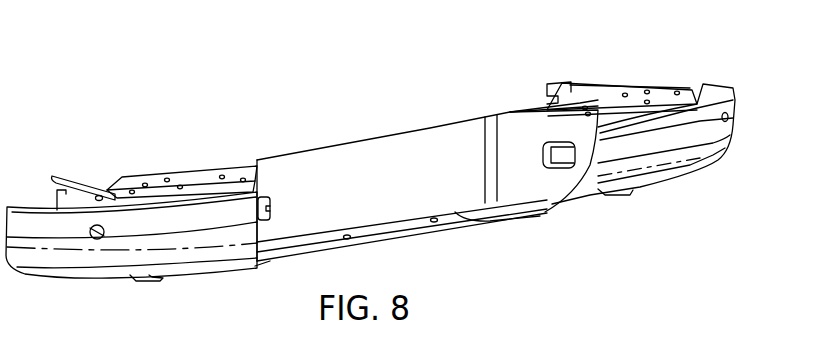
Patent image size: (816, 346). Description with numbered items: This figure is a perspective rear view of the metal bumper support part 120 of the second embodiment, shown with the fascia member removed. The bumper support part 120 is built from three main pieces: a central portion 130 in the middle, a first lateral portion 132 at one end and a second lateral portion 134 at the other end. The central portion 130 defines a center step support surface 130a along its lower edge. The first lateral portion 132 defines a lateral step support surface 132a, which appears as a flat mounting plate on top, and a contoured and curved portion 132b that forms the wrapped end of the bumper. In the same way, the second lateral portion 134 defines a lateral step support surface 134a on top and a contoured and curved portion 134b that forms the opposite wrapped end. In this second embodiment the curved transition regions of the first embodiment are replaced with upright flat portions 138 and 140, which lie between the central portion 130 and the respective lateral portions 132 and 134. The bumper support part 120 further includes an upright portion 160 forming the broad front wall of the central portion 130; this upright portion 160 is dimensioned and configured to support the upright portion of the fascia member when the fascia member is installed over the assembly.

The bumper support part 120 is at (208, 44).
The central portion 130 is at (401, 220).
The center step support surface 130a is at (402, 223).
The first lateral portion 132 is at (193, 197).
The lateral step support surface 132a is at (158, 182).
The contoured and curved portion 132b is at (108, 253).
The second lateral portion 134 is at (662, 110).
The lateral step support surface 134a is at (637, 95).
The contoured and curved portion 134b is at (685, 150).
The upright flat portion 138 is at (258, 181).
The upright flat portion 140 is at (518, 138).
The upright portion 160 is at (343, 178).